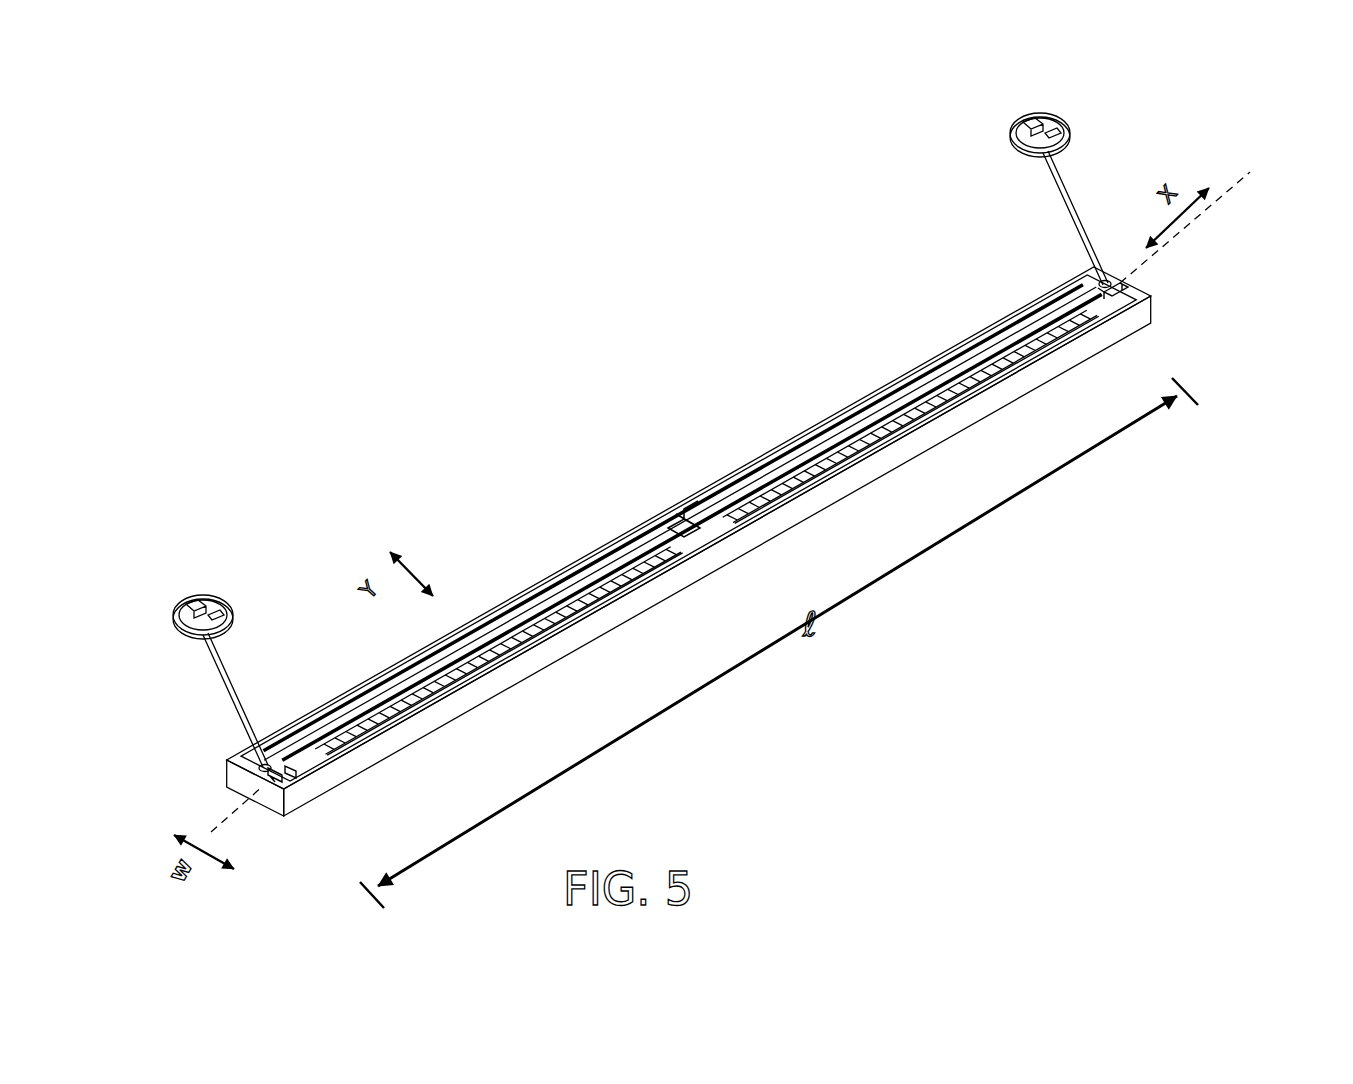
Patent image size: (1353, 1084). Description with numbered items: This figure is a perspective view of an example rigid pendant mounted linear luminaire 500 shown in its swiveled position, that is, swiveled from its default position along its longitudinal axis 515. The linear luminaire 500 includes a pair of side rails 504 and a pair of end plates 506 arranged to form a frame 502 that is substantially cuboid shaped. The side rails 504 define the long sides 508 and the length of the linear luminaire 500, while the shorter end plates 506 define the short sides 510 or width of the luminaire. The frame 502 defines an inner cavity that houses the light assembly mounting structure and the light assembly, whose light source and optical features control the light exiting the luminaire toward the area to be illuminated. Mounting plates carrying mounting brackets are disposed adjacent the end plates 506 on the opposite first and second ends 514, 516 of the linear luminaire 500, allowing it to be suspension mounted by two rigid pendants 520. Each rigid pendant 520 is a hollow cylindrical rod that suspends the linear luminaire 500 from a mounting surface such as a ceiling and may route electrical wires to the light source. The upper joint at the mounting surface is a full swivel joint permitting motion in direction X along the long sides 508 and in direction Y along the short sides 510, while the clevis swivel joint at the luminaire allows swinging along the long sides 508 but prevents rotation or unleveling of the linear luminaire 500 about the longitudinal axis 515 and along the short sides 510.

The linear luminaire 500 is at (701, 492).
The frame 502 is at (184, 777).
The side rails 504 is at (615, 530).
The long sides 508 is at (287, 751).
The end plates 506 is at (263, 792).
The short sides 510 is at (277, 774).
The first end of the linear luminaire 514 is at (210, 760).
The second end of the linear luminaire 516 is at (1122, 256).
The longitudinal axis 515 is at (1238, 178).
The rigid pendants 520 is at (228, 665).